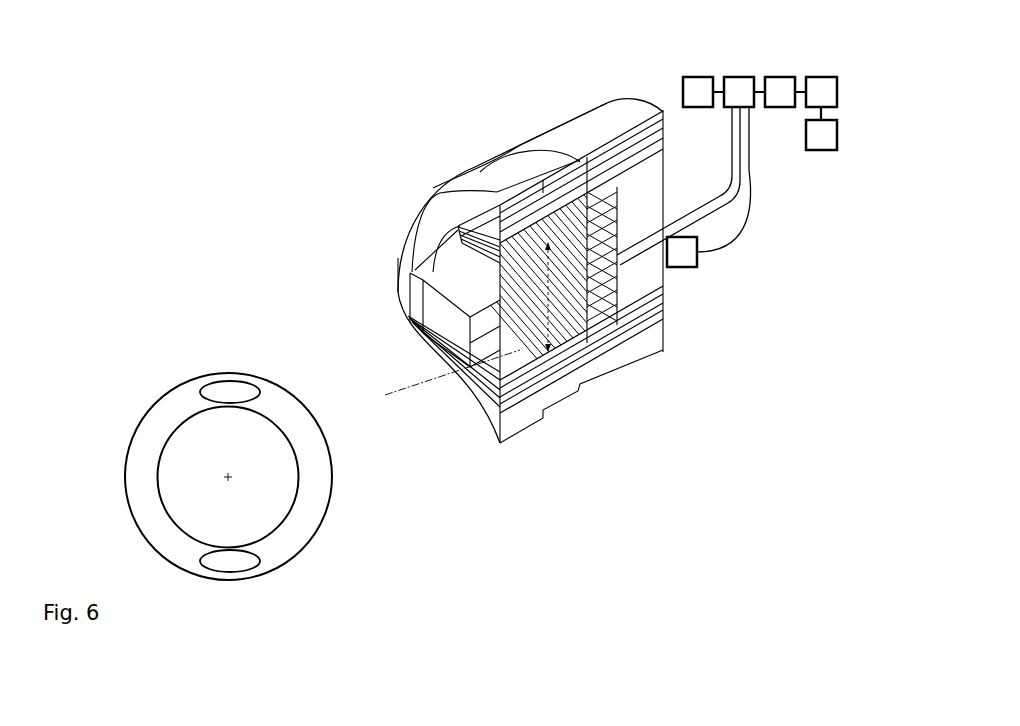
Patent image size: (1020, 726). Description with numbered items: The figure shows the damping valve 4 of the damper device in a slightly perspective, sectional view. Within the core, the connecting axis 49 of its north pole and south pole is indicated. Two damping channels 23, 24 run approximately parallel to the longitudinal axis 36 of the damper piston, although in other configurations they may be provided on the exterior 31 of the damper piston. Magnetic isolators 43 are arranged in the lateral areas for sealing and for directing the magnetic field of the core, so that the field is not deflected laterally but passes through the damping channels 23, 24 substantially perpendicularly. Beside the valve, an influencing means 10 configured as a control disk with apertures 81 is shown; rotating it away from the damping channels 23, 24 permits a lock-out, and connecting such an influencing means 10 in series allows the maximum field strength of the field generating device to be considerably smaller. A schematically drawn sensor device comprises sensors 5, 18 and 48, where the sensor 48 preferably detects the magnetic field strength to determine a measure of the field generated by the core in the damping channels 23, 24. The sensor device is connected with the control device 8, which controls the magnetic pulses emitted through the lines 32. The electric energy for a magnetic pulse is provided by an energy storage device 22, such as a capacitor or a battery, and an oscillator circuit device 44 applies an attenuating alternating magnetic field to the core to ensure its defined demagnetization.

The damping valve 4 is at (405, 172).
The sensor 5 is at (825, 90).
The control device 8 is at (739, 82).
The influencing means 10 is at (165, 413).
The sensor 18 is at (827, 137).
The energy storage device 22 is at (783, 82).
The damping channel 23 is at (663, 162).
The damping channel 24 is at (665, 318).
The exterior of the damper piston 31 is at (457, 170).
The lines 32 is at (717, 205).
The longitudinal axis 36 is at (400, 397).
The magnetic isolator 43 is at (600, 160).
The oscillator circuit device 44 is at (690, 82).
The sensor 48 is at (690, 258).
The connecting axis 49 is at (520, 266).
The apertures 81 is at (228, 393).